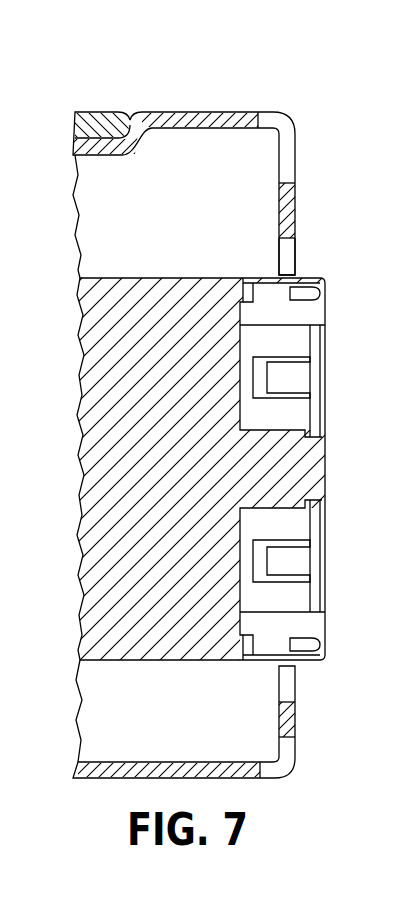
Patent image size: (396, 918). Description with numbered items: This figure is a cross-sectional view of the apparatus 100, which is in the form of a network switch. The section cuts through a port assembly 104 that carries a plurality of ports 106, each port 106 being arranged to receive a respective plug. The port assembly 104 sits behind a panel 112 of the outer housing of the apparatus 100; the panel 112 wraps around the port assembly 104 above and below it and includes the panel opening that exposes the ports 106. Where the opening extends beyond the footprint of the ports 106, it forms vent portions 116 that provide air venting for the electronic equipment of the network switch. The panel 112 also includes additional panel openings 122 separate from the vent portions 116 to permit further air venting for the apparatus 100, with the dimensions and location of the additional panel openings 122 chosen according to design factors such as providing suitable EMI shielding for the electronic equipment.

The apparatus 100 is at (266, 92).
The port assembly 104 is at (168, 273).
The port 106 is at (316, 378).
The panel 112 is at (203, 112).
The vent portion 116 is at (289, 255).
The additional panel opening 122 is at (287, 155).